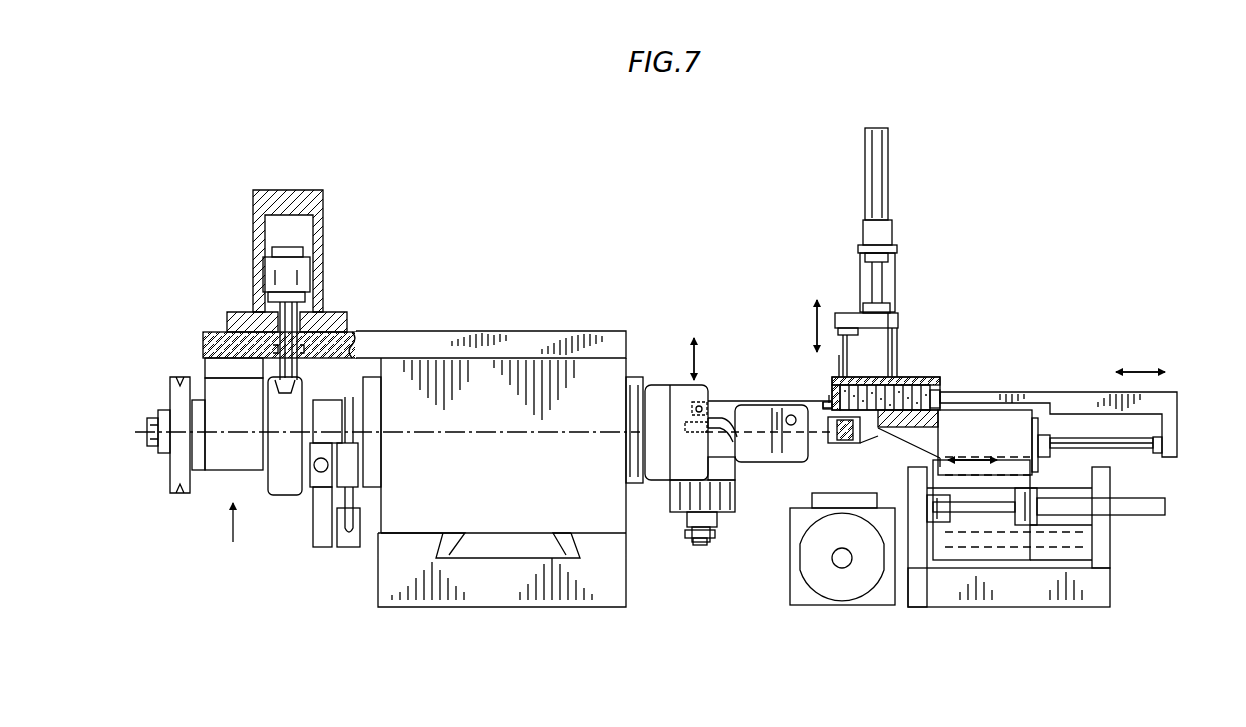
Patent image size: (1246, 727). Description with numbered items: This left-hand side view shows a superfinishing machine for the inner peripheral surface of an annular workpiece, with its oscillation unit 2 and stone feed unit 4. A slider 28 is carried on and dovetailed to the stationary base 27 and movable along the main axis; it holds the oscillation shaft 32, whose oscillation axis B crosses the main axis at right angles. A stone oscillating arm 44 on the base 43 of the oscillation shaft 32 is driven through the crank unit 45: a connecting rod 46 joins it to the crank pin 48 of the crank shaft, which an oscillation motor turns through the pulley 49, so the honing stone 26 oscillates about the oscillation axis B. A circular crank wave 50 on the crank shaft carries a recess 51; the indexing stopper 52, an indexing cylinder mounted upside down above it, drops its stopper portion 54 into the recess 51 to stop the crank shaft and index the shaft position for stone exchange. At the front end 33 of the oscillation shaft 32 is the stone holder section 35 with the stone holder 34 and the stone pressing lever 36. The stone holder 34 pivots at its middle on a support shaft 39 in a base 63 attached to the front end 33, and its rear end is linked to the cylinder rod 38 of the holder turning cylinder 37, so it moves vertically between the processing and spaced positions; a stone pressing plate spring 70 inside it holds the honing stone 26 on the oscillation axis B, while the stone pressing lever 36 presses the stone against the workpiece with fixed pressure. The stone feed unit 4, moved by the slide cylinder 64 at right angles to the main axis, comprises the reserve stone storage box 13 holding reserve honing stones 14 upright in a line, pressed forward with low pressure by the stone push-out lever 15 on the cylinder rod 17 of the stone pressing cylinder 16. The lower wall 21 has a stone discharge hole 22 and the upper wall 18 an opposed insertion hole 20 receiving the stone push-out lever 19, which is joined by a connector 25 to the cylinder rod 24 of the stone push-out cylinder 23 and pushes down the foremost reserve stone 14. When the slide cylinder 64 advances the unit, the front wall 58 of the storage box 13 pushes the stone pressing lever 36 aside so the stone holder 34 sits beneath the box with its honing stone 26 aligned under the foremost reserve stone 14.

The oscillation unit 2 is at (564, 329).
The stone feed unit 4 is at (949, 373).
The reserve stone storage box 13 is at (927, 380).
The reserve honing stones 14 is at (916, 380).
The stone push-out lever 15 is at (1067, 395).
The stone pressing cylinder 16 is at (1020, 417).
The cylinder rod 17 is at (1130, 446).
The upper wall 18 is at (893, 318).
The stone push-out lever 19 is at (838, 362).
The insertion hole 20 is at (828, 392).
The lower wall 21 is at (943, 400).
The stone discharge hole 22 is at (828, 402).
The stone push-out cylinder 23 is at (865, 141).
The cylinder rod 24 is at (873, 272).
The connector 25 is at (855, 315).
The honing stone 26 is at (846, 442).
The stationary base 27 is at (488, 595).
The slider 28 is at (503, 383).
The oscillation shaft 32 is at (654, 374).
The front end 33 is at (663, 393).
The stone holder 34 is at (863, 442).
The stone holder section 35 is at (823, 455).
The stone pressing lever 36 is at (833, 405).
The holder turning cylinder 37 is at (678, 510).
The cylinder rod 38 is at (738, 437).
The support shaft 39 is at (792, 425).
The base 43 is at (362, 415).
The stone oscillating arm 44 is at (323, 540).
The crank unit 45 is at (231, 539).
The connecting rod 46 is at (348, 530).
The crank pin 48 is at (318, 472).
The pulley 49 is at (177, 397).
The crank wave 50 is at (280, 485).
The recess 51 is at (258, 383).
The indexing stopper 52 is at (323, 224).
The stopper portion 54 is at (291, 327).
The front wall 58 is at (822, 398).
The base 63 is at (763, 456).
The slide cylinder 64 is at (1135, 506).
The stone pressing plate spring 70 is at (835, 444).
The oscillation axis B is at (457, 430).